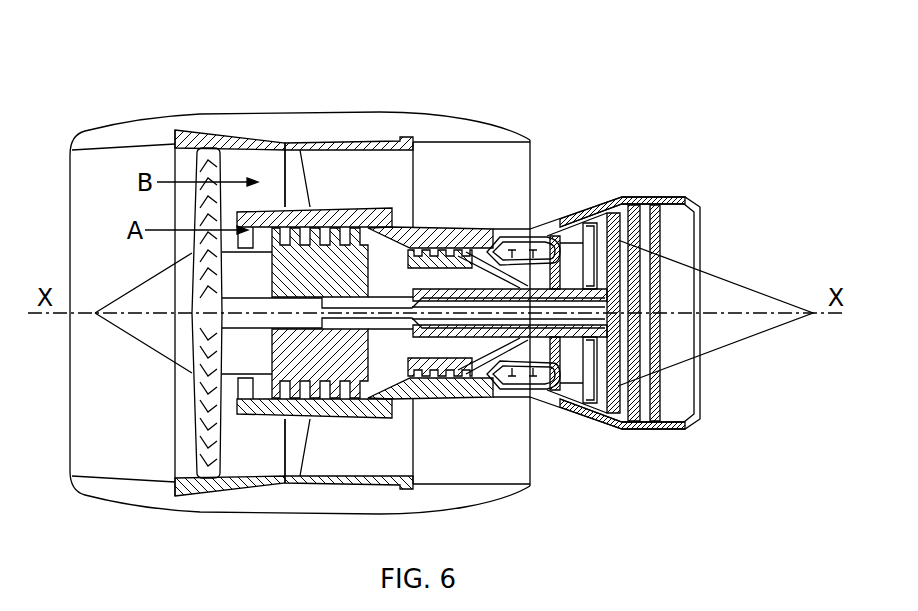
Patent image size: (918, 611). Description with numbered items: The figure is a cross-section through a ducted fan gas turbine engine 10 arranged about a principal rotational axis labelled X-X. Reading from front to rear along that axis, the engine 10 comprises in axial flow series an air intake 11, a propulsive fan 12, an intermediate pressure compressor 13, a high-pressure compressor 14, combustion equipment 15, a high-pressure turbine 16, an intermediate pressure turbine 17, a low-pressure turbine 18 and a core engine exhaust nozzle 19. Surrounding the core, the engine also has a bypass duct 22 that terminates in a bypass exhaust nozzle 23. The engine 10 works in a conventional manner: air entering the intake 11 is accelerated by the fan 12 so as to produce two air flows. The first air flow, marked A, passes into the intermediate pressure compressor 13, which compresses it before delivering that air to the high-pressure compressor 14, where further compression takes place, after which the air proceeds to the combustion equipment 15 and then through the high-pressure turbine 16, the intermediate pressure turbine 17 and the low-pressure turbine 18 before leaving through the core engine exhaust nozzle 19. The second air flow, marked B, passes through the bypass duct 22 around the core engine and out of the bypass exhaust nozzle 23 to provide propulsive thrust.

The gas turbine engine 10 is at (115, 80).
The air intake 11 is at (120, 146).
The propulsive fan 12 is at (197, 441).
The intermediate pressure compressor 13 is at (343, 400).
The high-pressure compressor 14 is at (441, 250).
The combustion equipment 15 is at (482, 391).
The high-pressure turbine 16 is at (553, 397).
The intermediate pressure turbine 17 is at (593, 233).
The low-pressure turbine 18 is at (605, 418).
The core engine exhaust nozzle 19 is at (693, 203).
The bypass duct 22 is at (456, 184).
The bypass exhaust nozzle 23 is at (535, 140).